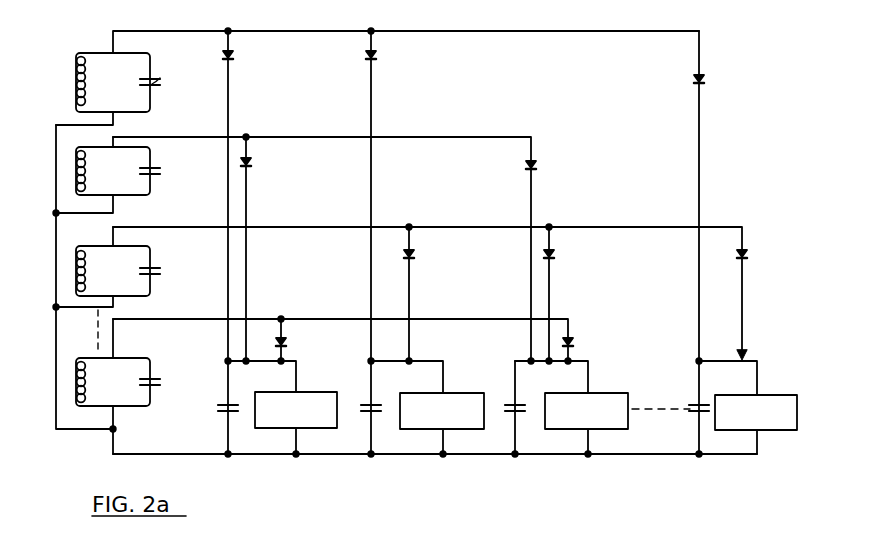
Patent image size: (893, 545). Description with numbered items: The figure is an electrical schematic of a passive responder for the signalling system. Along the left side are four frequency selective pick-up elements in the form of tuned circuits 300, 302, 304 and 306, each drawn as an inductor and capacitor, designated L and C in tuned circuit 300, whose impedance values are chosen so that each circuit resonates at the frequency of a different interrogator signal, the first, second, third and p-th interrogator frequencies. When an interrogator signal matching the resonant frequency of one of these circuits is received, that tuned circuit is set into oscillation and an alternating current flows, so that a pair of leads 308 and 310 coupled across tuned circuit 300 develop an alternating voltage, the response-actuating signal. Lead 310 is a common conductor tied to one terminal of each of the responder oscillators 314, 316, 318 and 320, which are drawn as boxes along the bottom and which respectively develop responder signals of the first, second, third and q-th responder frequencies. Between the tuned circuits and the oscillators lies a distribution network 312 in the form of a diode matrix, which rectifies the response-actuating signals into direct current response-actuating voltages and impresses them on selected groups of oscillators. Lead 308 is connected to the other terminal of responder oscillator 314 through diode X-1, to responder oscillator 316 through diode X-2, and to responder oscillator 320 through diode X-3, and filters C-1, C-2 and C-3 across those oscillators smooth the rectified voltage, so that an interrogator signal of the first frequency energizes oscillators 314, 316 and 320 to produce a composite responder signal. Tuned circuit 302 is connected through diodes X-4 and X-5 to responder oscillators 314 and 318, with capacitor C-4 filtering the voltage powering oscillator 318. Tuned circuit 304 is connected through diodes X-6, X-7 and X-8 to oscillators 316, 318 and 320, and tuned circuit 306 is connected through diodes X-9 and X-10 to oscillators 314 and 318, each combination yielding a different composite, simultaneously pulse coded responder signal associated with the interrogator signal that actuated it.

The tuned circuit 300 is at (148, 124).
The tuned circuit 302 is at (151, 184).
The tuned circuit 304 is at (151, 287).
The tuned circuit 306 is at (151, 410).
The lead 308 is at (134, 18).
The lead 310 is at (56, 405).
The distribution network 312 is at (426, 219).
The responder oscillator 314 is at (338, 391).
The responder oscillator 316 is at (485, 391).
The responder oscillator 318 is at (629, 391).
The responder oscillator 320 is at (801, 394).
The diode X-1 is at (234, 58).
The diode X-2 is at (377, 58).
The diode X-3 is at (727, 71).
The diode X-4 is at (252, 165).
The diode X-5 is at (537, 168).
The diode X-6 is at (427, 258).
The diode X-7 is at (554, 257).
The diode X-8 is at (747, 257).
The diode X-9 is at (286, 345).
The diode X-10 is at (573, 345).
The filter capacitor C-1 is at (220, 408).
The filter capacitor C-2 is at (364, 406).
The filter capacitor C-3 is at (508, 407).
The capacitor C-4 is at (688, 410).